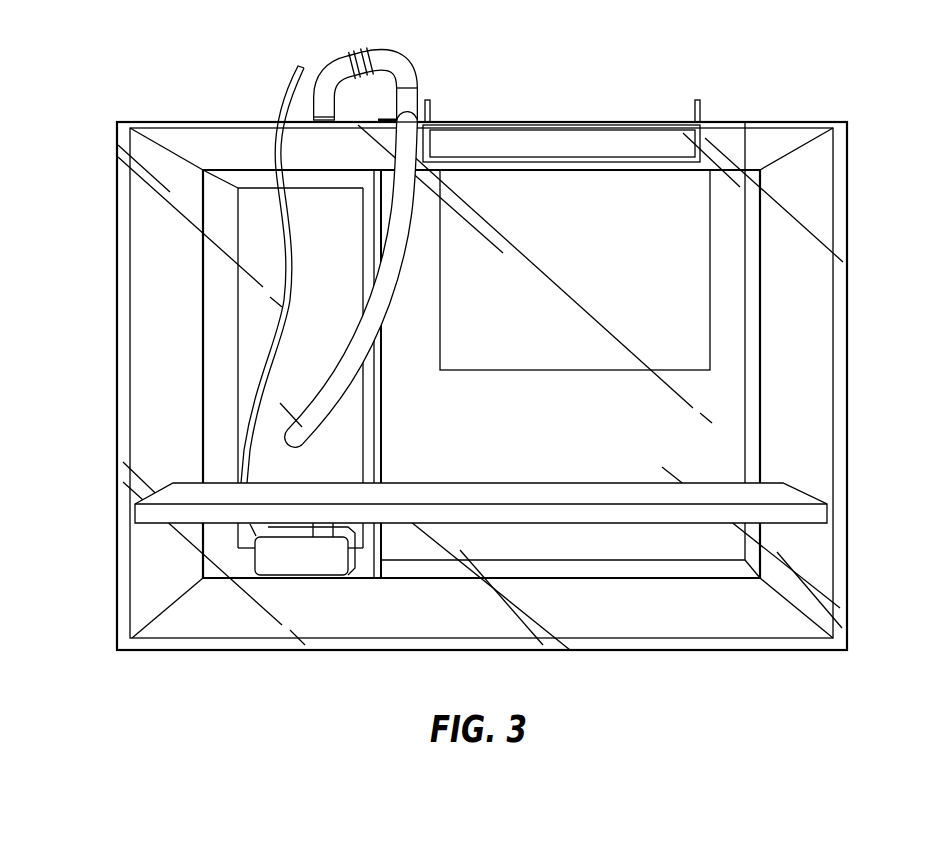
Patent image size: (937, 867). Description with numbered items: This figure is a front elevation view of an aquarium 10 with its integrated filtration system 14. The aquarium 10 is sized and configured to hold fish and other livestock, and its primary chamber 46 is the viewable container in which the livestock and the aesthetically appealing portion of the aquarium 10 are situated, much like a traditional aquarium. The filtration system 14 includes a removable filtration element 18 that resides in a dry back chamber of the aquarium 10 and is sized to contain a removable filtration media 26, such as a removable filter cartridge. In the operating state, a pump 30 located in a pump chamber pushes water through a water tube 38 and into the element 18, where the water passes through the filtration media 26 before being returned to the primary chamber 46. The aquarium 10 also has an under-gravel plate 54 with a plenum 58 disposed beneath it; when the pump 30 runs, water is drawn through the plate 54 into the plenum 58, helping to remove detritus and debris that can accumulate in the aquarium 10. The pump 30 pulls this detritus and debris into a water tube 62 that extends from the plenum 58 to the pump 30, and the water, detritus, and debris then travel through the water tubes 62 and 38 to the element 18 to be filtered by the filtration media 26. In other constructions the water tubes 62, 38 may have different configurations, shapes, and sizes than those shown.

The aquarium 10 is at (100, 293).
The filtration system 14 is at (312, 73).
The filtration element 18 is at (750, 292).
The filtration media 26 is at (580, 203).
The pump 30 is at (293, 560).
The water tube 38 is at (283, 90).
The primary chamber 46 is at (177, 258).
The under-gravel plate 54 is at (186, 492).
The plenum 58 is at (177, 568).
The water tube 62 is at (366, 52).